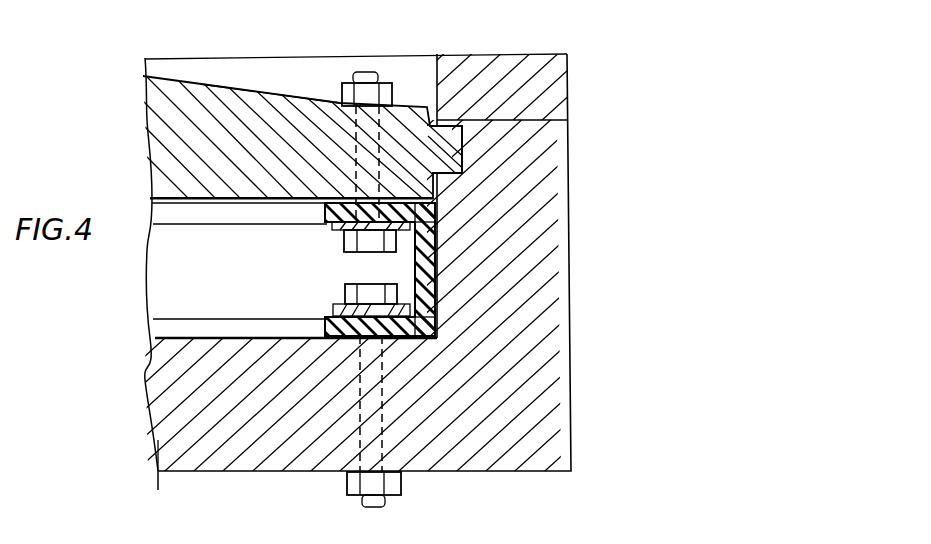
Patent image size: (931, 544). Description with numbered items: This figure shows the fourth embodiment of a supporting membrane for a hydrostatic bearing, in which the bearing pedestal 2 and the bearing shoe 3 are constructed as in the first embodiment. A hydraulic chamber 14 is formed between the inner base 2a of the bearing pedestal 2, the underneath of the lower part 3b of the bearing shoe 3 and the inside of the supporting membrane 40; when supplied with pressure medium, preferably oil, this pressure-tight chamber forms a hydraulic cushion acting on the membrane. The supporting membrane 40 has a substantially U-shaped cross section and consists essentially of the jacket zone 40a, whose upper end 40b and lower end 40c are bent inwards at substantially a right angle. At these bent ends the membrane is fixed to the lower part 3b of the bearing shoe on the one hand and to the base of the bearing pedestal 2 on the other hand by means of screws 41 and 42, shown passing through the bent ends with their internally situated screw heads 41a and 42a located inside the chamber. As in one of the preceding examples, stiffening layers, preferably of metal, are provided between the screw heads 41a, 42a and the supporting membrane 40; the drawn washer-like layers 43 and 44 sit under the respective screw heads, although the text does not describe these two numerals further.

The bearing pedestal 2 is at (576, 374).
The inner base of the bearing pedestal 2a is at (209, 337).
The bearing shoe 3 is at (193, 82).
The lower part of the bearing shoe 3b is at (260, 105).
The hydraulic chamber 14 is at (176, 286).
The supporting membrane 40 is at (409, 255).
The jacket zone 40a is at (430, 252).
The upper end of the jacket zone 40b is at (430, 210).
The lower end of the jacket zone 40c is at (430, 318).
The screw 41 is at (388, 93).
The screw head 41a is at (349, 251).
The screw 42 is at (377, 379).
The screw head 42a is at (344, 294).
The washer 43 is at (328, 227).
The washer 44 is at (332, 314).